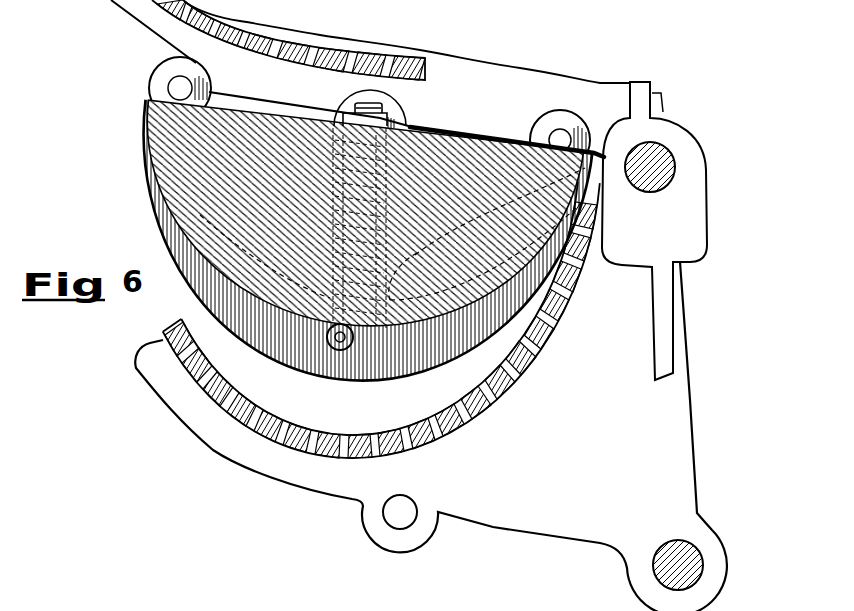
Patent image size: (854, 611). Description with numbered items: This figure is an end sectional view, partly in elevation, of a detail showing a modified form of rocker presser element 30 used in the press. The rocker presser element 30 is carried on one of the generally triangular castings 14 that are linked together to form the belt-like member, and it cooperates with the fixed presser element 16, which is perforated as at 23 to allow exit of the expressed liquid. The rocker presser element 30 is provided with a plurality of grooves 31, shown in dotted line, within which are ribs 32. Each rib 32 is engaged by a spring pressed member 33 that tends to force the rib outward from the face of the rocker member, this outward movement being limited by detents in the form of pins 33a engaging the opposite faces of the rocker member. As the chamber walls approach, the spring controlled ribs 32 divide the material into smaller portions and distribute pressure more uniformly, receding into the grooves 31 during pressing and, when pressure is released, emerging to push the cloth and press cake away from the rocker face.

The casting 14 is at (431, 436).
The fixed presser element 16 is at (458, 434).
The perforations 23 is at (406, 442).
The rocker presser element 30 is at (185, 178).
The grooves 31 is at (177, 226).
The rib 32 is at (316, 344).
The spring pressed member 33 is at (414, 129).
The pins 33a is at (586, 116).